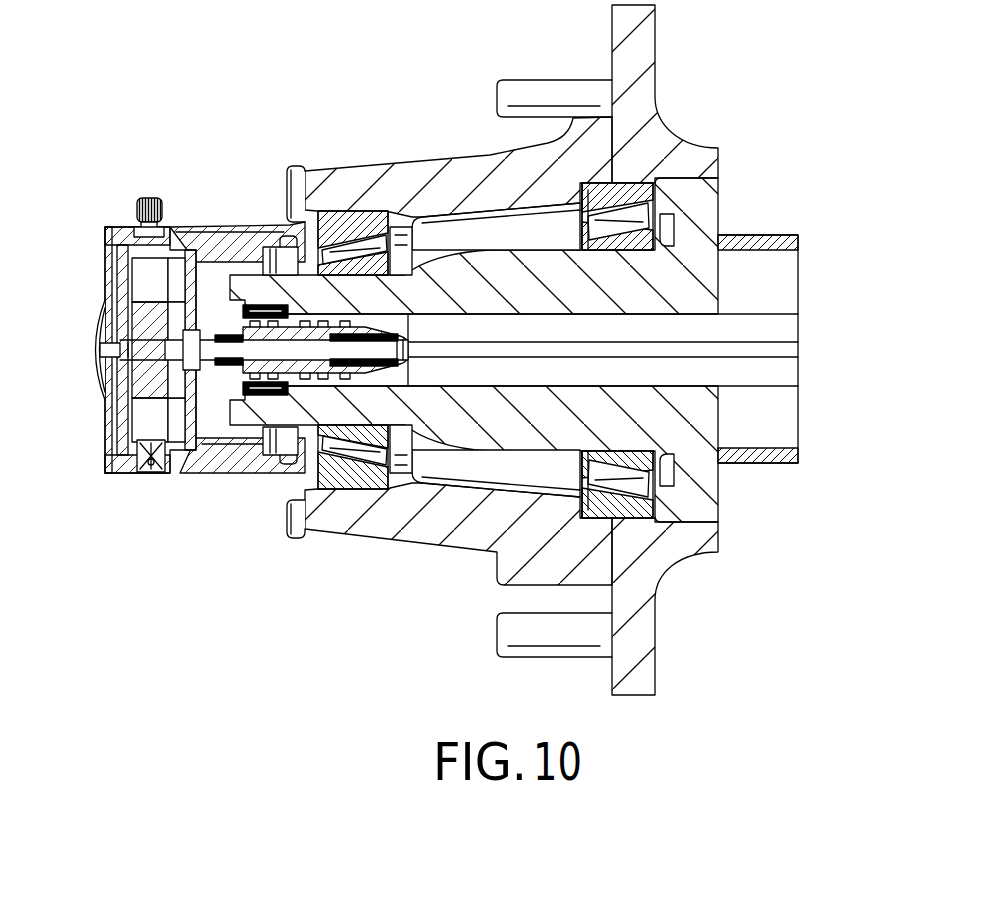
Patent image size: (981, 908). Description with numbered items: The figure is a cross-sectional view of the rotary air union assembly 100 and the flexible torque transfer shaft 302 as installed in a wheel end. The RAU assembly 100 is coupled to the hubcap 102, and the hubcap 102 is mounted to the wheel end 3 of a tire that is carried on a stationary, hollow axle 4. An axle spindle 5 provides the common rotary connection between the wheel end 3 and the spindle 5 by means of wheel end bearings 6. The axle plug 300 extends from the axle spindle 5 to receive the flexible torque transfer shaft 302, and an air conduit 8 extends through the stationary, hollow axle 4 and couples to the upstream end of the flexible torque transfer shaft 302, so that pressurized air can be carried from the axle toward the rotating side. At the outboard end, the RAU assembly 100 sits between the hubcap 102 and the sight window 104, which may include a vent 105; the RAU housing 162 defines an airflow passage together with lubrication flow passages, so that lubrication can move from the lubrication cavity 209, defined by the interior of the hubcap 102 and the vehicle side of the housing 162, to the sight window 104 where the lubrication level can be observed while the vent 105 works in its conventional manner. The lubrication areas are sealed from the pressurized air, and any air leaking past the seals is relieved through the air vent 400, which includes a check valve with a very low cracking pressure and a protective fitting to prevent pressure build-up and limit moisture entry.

The rotary air union assembly 100 is at (88, 216).
The hubcap 102 is at (220, 226).
The sight window 104 is at (104, 285).
The vent 105 is at (94, 350).
The housing 162 is at (124, 226).
The air vent 400 is at (142, 490).
The axle plug 300 is at (255, 395).
The flexible torque transfer shaft 302 is at (243, 378).
The lubrication cavity 209 is at (277, 465).
The wheel end 3 is at (342, 166).
The hollow axle 4 is at (773, 235).
The axle spindle 5 is at (468, 425).
The wheel end bearings 6 is at (357, 455).
The air conduit 8 is at (766, 358).